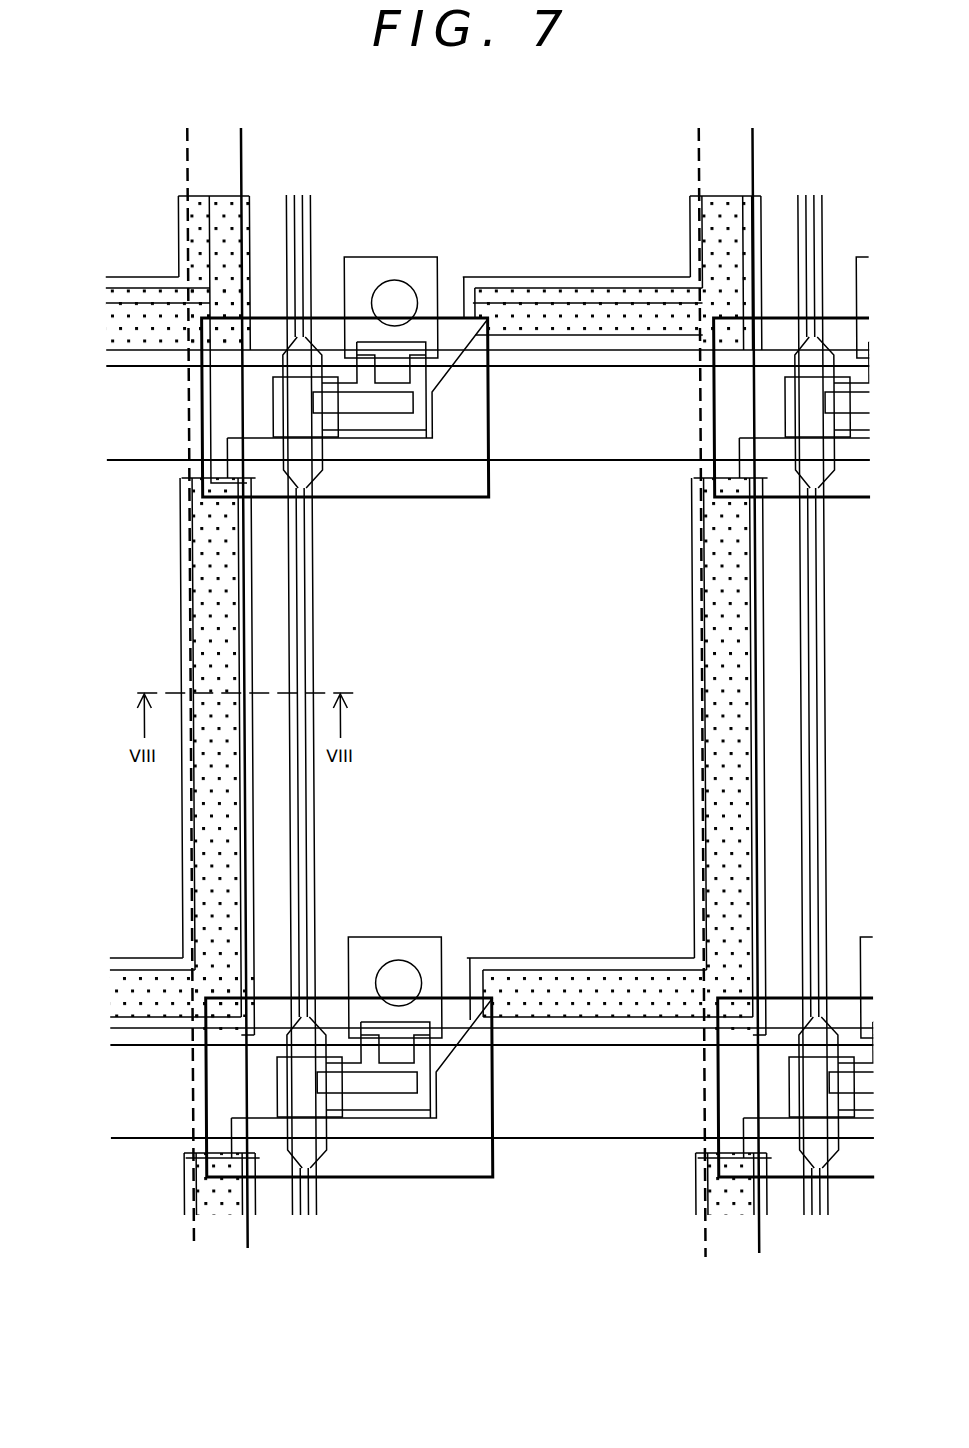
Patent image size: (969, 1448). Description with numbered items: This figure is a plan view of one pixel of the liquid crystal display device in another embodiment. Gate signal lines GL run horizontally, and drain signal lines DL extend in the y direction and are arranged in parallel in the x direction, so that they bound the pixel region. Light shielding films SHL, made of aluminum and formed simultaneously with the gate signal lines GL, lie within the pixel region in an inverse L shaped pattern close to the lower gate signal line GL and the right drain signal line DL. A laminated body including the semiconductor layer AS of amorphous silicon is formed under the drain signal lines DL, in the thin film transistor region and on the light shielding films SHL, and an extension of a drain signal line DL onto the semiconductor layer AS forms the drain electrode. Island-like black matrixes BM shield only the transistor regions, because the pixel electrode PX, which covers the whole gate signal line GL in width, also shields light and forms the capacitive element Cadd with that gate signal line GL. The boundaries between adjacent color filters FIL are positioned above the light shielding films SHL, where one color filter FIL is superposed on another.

The black matrix BM is at (448, 318).
The light shielding film SHL is at (516, 218).
The pixel electrode PX is at (652, 323).
The capacitive element Cadd is at (596, 382).
The gate signal line GL is at (101, 367).
The semiconductor layer AS is at (140, 552).
The drain signal line DL is at (289, 1220).
The color filter FIL is at (190, 1243).